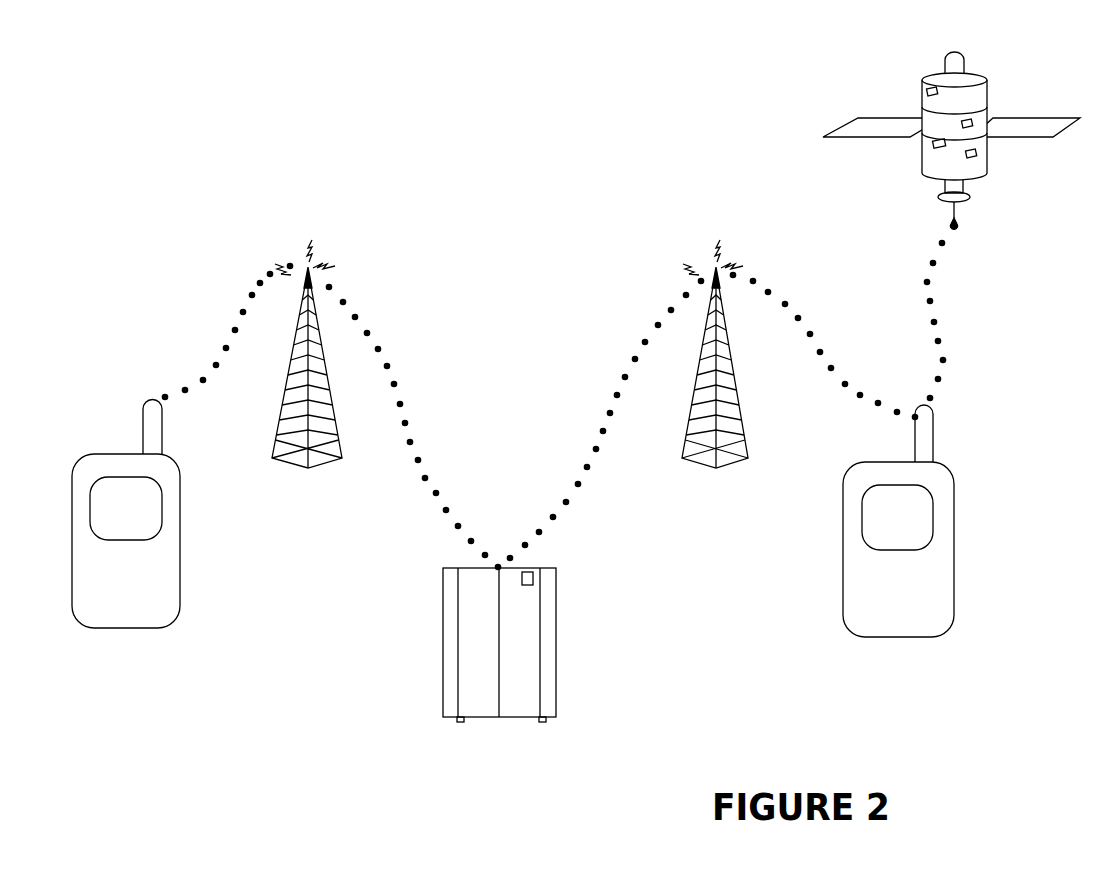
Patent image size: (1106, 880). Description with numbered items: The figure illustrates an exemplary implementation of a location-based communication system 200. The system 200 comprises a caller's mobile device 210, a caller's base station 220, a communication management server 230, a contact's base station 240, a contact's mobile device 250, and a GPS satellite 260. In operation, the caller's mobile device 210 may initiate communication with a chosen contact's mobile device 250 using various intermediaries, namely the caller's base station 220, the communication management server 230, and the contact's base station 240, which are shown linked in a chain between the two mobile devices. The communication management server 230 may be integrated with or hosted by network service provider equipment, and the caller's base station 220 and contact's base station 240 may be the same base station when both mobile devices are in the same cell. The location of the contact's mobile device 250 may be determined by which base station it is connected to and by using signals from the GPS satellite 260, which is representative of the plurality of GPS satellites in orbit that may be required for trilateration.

The location-based communication system 200 is at (155, 73).
The caller's mobile device 210 is at (123, 628).
The caller's base station 220 is at (306, 266).
The communication management server 230 is at (499, 717).
The contact's base station 240 is at (714, 266).
The contact's mobile device 250 is at (898, 637).
The GPS satellite 260 is at (1028, 128).